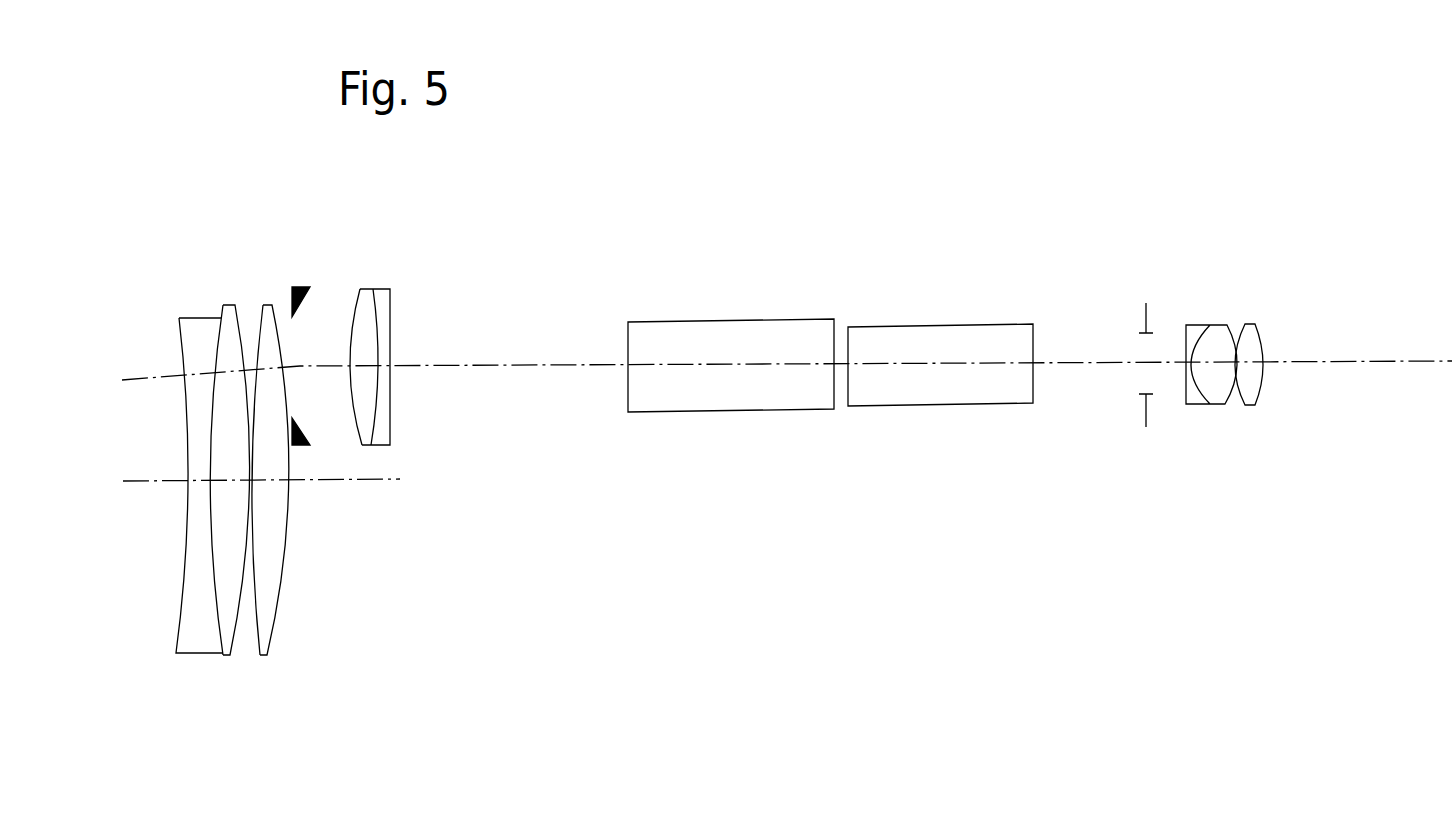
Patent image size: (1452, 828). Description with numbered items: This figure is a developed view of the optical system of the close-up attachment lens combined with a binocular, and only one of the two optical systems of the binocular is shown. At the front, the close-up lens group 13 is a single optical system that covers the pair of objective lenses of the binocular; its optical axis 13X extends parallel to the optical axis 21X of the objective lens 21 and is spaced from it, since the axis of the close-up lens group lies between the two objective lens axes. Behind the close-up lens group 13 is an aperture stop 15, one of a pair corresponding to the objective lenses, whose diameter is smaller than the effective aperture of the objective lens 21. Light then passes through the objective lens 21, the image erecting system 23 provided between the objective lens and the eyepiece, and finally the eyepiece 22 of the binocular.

The close-up lens group 13 is at (303, 662).
The optical axis of the close-up lens group 13X is at (320, 483).
The aperture stop 15 is at (307, 289).
The objective lens 21 is at (362, 305).
The optical axis of the objective lens 21X is at (465, 366).
The eyepiece 22 is at (1277, 305).
The image erecting system 23 is at (1042, 310).